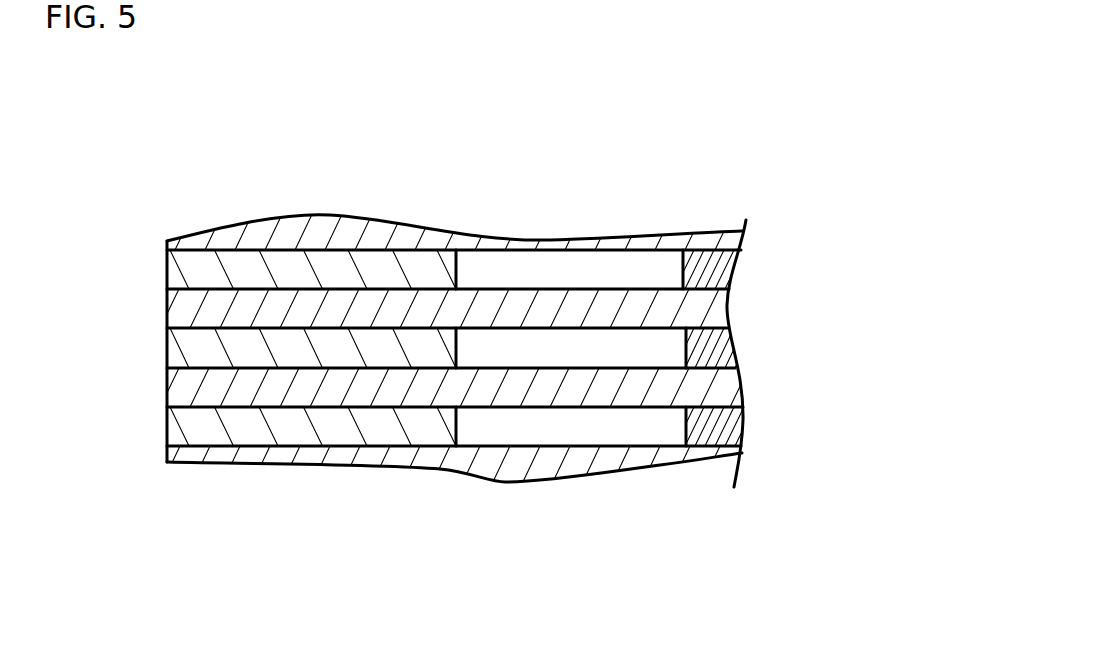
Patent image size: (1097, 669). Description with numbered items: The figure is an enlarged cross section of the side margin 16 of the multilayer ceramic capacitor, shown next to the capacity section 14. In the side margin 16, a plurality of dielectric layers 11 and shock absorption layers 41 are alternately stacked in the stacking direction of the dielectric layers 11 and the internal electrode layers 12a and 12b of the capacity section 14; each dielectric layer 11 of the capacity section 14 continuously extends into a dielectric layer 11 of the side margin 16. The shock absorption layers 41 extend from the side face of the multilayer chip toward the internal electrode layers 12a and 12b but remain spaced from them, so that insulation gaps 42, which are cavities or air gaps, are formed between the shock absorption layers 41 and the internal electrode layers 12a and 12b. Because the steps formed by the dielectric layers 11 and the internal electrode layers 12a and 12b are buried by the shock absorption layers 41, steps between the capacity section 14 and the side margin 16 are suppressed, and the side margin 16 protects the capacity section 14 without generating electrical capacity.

The dielectric layer 11 is at (210, 240).
The shock absorption layer 41 is at (187, 278).
The insulation gap 42 is at (542, 268).
The internal electrode layer 12a is at (713, 263).
The internal electrode layer 12b is at (713, 347).
The capacity section 14 is at (958, 120).
The side margin 16 is at (684, 177).